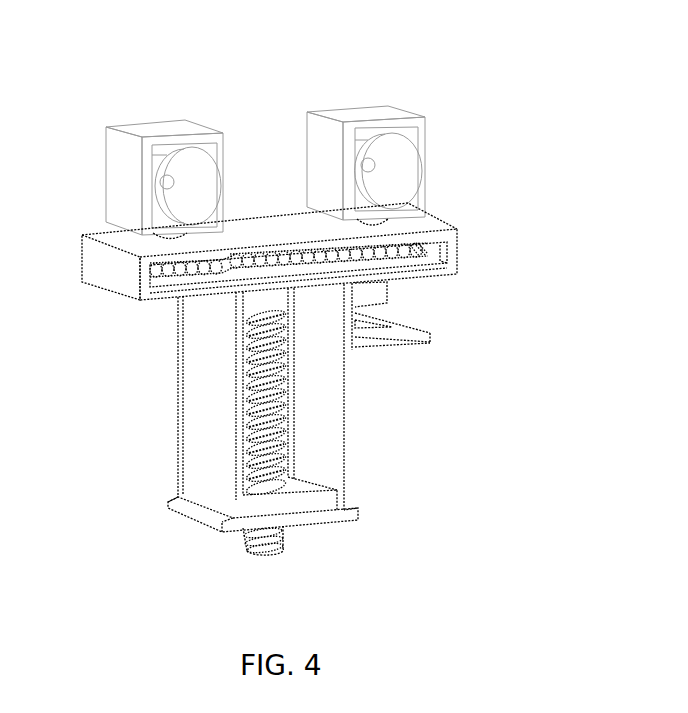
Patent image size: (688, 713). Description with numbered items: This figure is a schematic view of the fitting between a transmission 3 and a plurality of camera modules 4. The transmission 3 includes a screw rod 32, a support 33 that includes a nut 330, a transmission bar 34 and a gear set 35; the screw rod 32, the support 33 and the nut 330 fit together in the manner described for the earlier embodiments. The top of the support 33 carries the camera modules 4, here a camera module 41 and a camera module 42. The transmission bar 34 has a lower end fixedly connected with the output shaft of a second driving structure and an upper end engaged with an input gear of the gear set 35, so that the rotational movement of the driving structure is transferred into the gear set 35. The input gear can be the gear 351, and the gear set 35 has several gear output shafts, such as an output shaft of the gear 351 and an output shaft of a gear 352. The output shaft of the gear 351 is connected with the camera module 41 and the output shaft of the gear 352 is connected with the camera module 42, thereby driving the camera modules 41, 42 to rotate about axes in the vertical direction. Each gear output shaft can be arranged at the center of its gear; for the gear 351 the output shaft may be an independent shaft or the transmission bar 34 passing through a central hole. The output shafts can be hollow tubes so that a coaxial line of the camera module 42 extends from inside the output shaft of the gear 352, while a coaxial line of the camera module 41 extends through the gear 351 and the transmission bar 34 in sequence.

The transmission 3 is at (72, 270).
The camera modules 4 is at (243, 30).
The camera module 41 is at (322, 142).
The camera module 42 is at (122, 163).
The screw rod 32 is at (283, 413).
The support 33 is at (208, 450).
The transmission bar 34 is at (375, 293).
The gear set 35 is at (144, 277).
The nut 330 is at (293, 508).
The gear 351 is at (423, 255).
The gear 352 is at (163, 300).